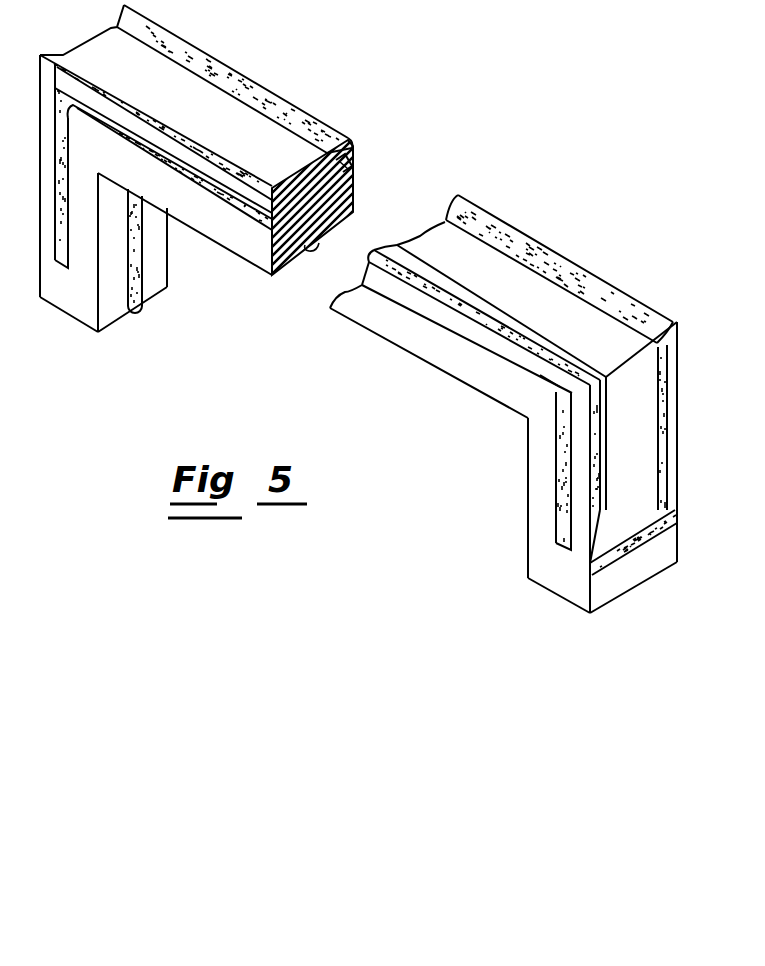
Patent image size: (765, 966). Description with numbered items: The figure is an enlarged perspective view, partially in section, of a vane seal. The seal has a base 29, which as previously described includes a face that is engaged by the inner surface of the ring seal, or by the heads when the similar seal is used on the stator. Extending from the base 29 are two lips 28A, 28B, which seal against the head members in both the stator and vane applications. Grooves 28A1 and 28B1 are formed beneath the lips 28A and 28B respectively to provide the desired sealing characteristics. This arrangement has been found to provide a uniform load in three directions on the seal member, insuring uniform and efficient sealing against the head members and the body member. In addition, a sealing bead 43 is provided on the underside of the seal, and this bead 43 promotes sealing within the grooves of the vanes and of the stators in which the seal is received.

The lip 28A is at (500, 243).
The groove 28A1 is at (347, 163).
The lip 28B is at (497, 314).
The groove 28B1 is at (543, 384).
The base 29 is at (607, 593).
The sealing bead 43 is at (138, 302).